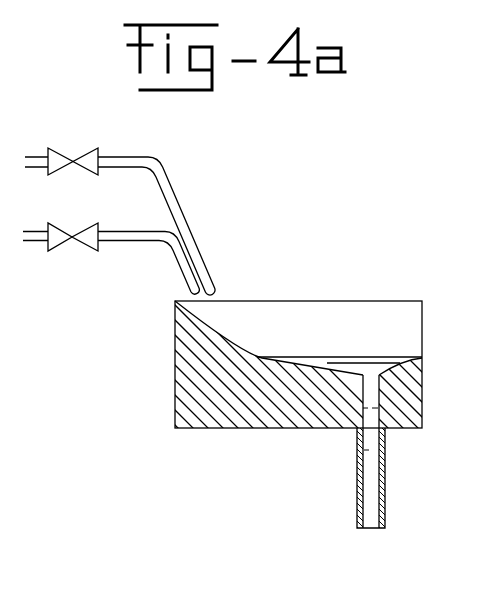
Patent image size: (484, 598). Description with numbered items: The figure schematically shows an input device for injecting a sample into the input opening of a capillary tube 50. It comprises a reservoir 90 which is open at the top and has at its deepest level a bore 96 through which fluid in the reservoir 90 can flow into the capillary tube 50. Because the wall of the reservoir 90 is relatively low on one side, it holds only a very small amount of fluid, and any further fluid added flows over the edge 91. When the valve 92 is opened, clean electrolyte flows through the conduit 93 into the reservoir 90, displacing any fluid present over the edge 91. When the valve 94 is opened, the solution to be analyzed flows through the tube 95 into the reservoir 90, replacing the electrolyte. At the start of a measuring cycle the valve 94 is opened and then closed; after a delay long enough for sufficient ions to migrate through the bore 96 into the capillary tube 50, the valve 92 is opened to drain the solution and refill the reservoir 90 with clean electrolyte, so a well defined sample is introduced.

The capillary tube 50 is at (370, 508).
The reservoir 90 is at (240, 428).
The edge 91 is at (416, 357).
The valve 92 is at (64, 240).
The conduit 93 is at (130, 238).
The valve 94 is at (83, 153).
The tube 95 is at (178, 222).
The bore 96 is at (380, 402).